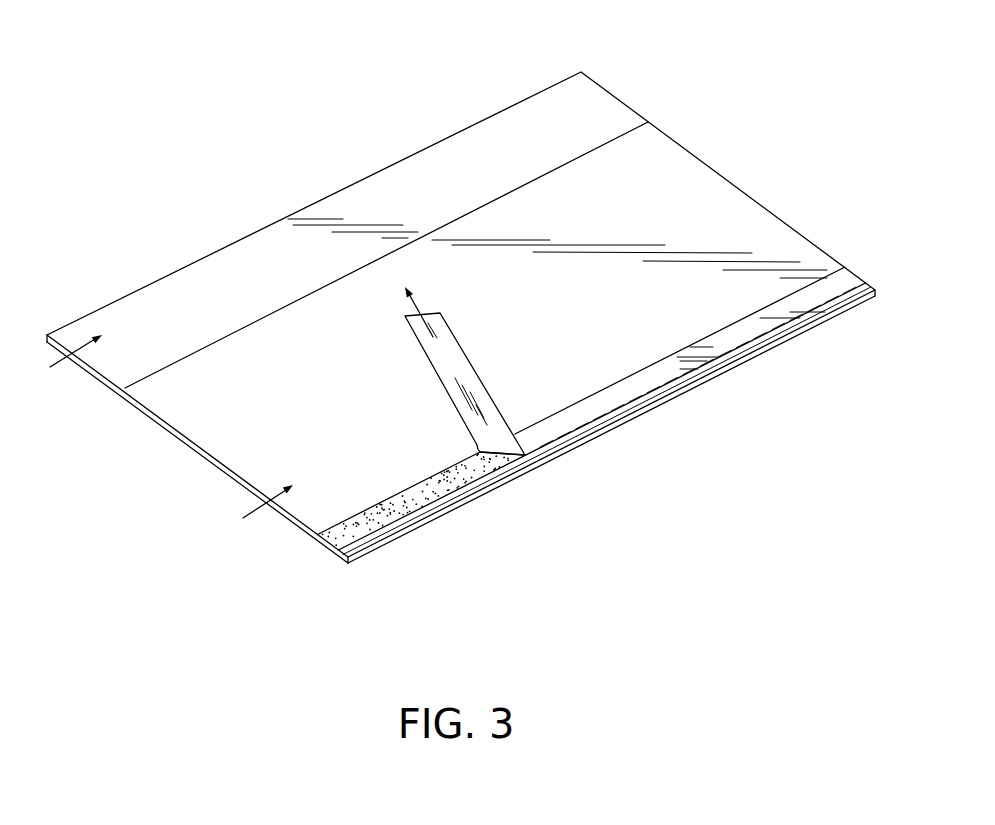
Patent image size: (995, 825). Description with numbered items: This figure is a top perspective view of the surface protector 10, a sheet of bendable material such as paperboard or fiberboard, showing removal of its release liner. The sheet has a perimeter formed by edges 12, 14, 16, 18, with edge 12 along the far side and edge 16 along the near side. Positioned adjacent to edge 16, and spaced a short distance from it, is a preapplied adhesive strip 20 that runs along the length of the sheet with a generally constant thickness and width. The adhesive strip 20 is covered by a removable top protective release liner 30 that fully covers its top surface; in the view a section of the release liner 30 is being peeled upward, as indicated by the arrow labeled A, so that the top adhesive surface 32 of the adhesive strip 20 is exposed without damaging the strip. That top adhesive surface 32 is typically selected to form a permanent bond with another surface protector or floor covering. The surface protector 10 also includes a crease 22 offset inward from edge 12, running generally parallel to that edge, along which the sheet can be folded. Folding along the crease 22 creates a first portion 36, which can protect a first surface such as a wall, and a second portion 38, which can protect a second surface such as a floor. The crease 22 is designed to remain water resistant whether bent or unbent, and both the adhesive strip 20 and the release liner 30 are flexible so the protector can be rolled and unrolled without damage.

The surface protector 10 is at (139, 121).
The edge 12 is at (492, 113).
The edge 14 is at (700, 158).
The edge 16 is at (560, 457).
The edge 18 is at (173, 437).
The adhesive strip 20 is at (815, 285).
The crease 22 is at (615, 140).
The removable top protective release liner 30 is at (470, 362).
The top adhesive surface 32 is at (402, 505).
The first portion 36 is at (57, 364).
The second portion 38 is at (250, 509).